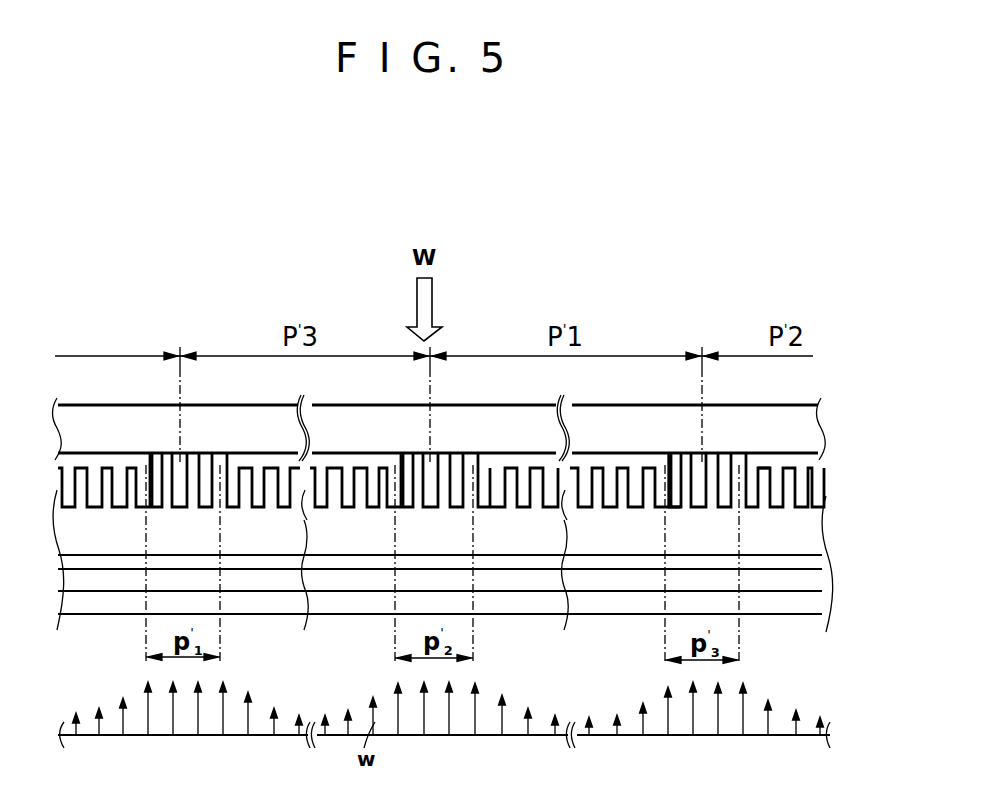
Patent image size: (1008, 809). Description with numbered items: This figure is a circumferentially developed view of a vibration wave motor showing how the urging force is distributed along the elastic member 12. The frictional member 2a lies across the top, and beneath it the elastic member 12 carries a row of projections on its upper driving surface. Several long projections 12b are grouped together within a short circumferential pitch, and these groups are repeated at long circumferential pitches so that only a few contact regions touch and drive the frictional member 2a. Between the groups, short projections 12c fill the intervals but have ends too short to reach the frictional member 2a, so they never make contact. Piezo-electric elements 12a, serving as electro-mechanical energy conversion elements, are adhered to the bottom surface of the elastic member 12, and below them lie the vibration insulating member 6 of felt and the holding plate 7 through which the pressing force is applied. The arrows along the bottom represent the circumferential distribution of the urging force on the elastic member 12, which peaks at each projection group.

The frictional member 2a is at (820, 428).
The elastic member 12 is at (464, 482).
The piezo-electric elements 12a is at (819, 563).
The long projections 12b is at (684, 462).
The short projections 12c is at (760, 464).
The vibration insulating member 6 is at (815, 590).
The holding plate 7 is at (811, 613).